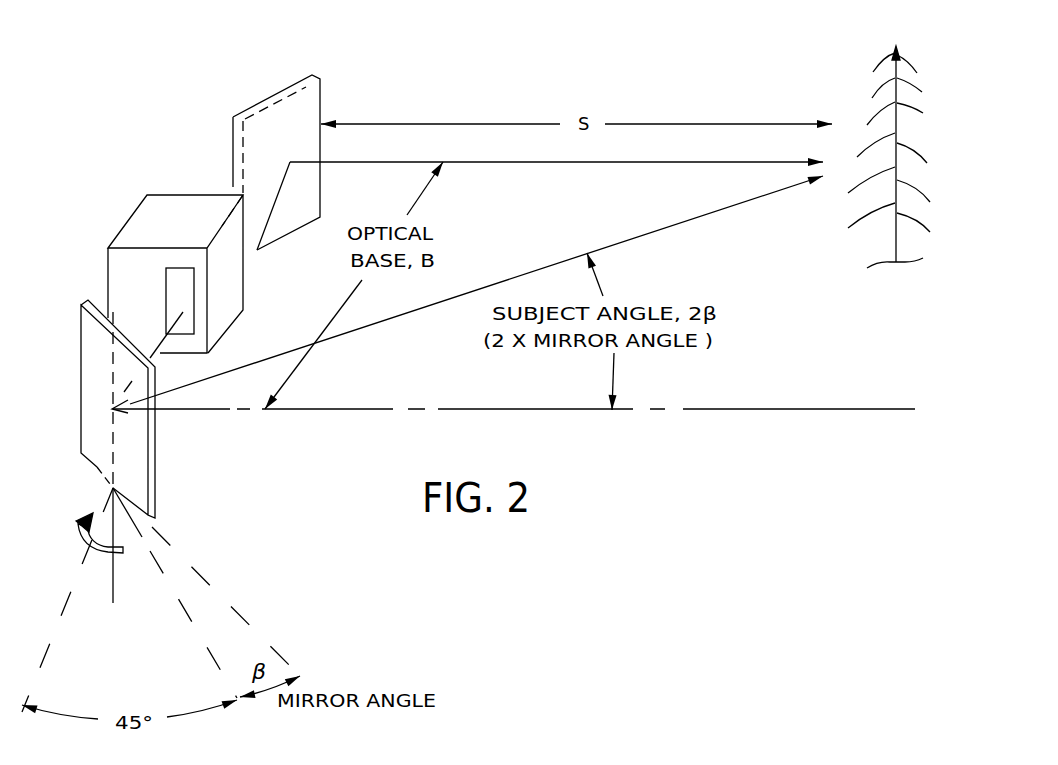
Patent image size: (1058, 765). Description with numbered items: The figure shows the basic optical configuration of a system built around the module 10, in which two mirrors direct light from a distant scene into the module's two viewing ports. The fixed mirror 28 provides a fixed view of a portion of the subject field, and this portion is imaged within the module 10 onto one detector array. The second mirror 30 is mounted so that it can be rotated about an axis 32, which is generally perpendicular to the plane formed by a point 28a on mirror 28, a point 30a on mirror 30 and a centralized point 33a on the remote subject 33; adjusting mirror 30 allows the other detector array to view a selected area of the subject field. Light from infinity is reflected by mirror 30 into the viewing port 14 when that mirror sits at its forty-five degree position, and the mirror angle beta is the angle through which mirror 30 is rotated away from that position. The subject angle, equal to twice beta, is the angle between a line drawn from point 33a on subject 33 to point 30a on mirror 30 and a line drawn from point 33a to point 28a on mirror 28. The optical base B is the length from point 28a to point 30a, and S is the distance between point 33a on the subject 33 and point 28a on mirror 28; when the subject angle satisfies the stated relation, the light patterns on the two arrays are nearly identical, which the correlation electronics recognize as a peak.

The module 10 is at (173, 193).
The viewing port 14 is at (183, 288).
The mirror 28 is at (298, 84).
The point on mirror 28a is at (293, 164).
The mirror 30 is at (81, 352).
The point on mirror 30a is at (115, 415).
The axis 32 is at (113, 581).
The remote subject 33 is at (882, 92).
The centralized point on subject 33a is at (838, 167).